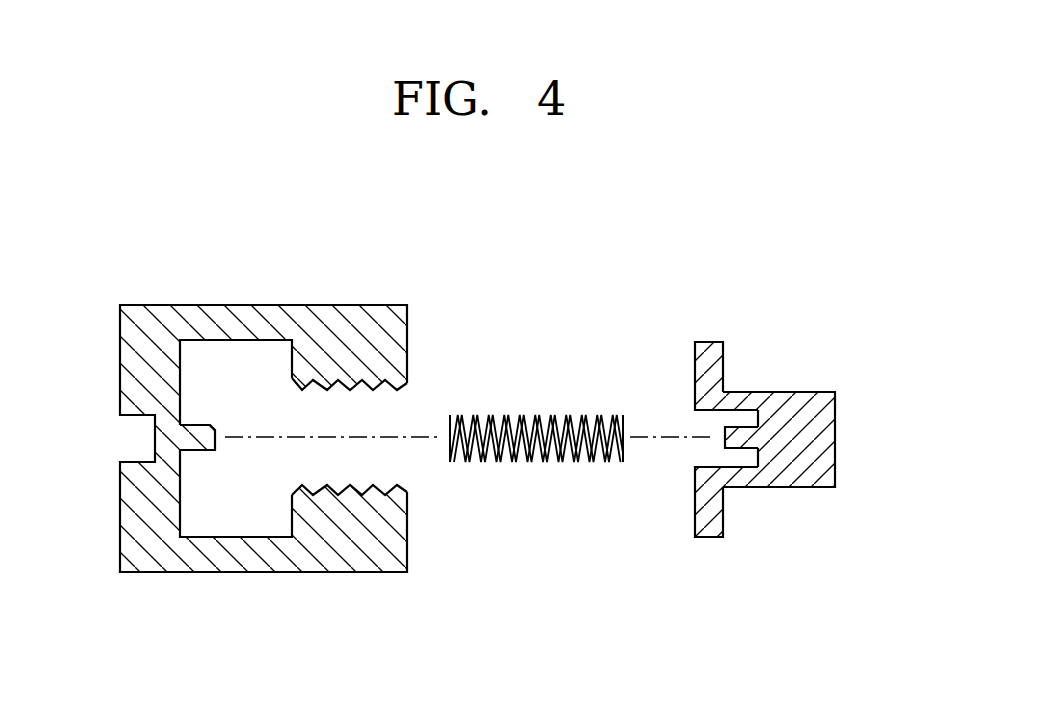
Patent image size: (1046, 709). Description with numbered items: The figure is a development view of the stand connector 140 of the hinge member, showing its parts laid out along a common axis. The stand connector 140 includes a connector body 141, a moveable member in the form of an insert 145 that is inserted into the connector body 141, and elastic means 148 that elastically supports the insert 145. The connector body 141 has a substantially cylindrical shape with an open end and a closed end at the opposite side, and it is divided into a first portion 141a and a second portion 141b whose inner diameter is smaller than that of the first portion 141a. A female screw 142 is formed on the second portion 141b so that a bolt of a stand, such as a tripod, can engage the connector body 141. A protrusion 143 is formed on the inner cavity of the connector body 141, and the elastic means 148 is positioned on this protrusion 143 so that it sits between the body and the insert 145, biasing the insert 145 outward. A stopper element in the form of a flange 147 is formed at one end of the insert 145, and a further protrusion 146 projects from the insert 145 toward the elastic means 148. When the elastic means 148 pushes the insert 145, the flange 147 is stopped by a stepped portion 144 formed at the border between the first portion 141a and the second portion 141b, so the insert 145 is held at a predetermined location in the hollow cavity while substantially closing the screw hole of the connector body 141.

The stand connector 140 is at (757, 255).
The connector body 141 is at (228, 655).
The first portion 141a is at (236, 556).
The second portion 141b is at (343, 556).
The female screw 142 is at (385, 480).
The protrusion 143 is at (205, 424).
The stepped portion 144 is at (283, 353).
The insert 145 is at (835, 437).
The protrusion 146 is at (738, 445).
The flange 147 is at (713, 537).
The elastic means 148 is at (530, 415).